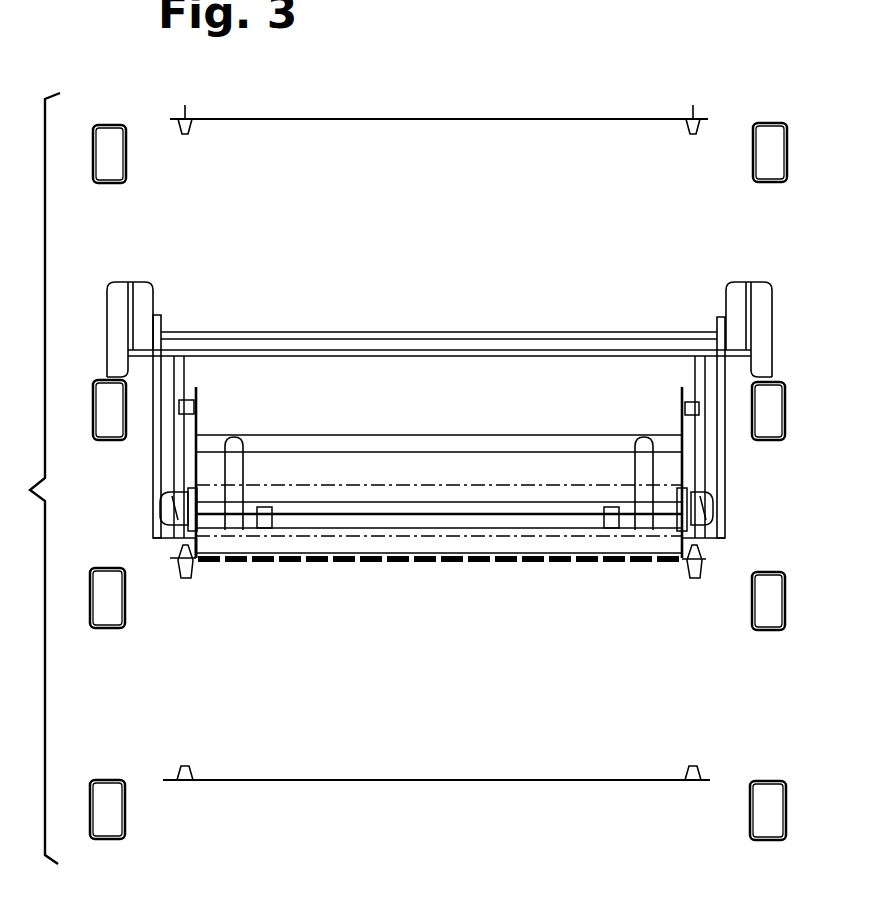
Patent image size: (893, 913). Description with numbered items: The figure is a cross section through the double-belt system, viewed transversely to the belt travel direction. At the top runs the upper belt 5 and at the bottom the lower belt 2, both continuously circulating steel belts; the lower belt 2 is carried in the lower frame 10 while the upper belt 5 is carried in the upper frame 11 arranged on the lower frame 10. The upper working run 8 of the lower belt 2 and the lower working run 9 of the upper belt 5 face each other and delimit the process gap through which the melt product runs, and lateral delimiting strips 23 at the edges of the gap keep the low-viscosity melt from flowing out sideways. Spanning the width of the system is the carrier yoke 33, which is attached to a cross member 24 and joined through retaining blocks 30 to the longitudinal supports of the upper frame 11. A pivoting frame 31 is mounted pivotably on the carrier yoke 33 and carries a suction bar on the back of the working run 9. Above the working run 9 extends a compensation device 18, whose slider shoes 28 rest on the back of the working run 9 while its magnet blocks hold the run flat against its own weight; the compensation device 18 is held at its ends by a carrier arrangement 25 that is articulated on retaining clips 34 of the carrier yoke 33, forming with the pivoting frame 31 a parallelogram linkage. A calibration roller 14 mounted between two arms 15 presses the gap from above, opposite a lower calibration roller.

The lower belt 2 is at (380, 780).
The upper belt 5 is at (378, 119).
The upper working run 8 is at (192, 553).
The lower working run 9 is at (186, 539).
The lower frame 10 is at (112, 614).
The upper frame 11 is at (112, 172).
The calibration roller 14 is at (706, 525).
The arm 15 is at (722, 460).
The compensation device 18 is at (584, 548).
The lateral delimiting strip 23 is at (688, 134).
The cross member 24 is at (518, 334).
The carrier arrangement 25 is at (198, 432).
The slider shoe 28 is at (503, 562).
The retaining block 30 is at (148, 300).
The pivoting frame 31 is at (240, 471).
The carrier yoke 33 is at (698, 372).
The retaining clip 34 is at (190, 406).